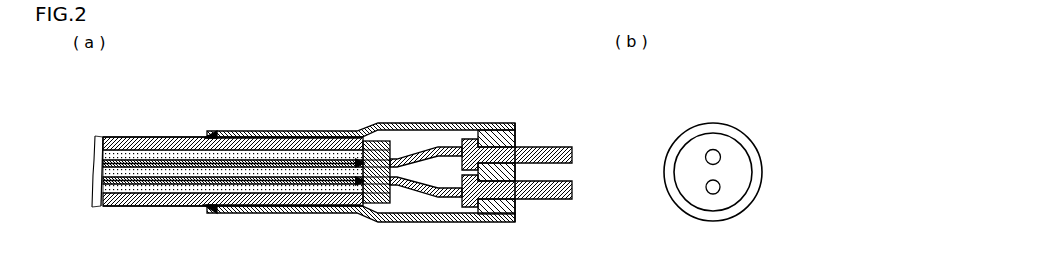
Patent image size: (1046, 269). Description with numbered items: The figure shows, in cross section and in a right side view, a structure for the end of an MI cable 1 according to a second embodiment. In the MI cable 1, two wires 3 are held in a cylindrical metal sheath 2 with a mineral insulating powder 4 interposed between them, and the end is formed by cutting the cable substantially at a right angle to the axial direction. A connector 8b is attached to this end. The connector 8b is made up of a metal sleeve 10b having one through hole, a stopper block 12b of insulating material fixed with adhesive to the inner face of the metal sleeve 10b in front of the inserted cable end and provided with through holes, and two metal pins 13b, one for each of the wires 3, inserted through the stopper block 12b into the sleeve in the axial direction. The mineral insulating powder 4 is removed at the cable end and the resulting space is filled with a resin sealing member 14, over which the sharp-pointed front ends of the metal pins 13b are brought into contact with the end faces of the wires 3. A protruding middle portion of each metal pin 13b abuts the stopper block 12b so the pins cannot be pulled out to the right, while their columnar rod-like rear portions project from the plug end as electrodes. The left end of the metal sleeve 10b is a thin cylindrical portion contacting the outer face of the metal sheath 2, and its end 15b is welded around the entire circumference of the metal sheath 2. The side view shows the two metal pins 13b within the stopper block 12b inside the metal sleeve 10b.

The MI cable 1 is at (143, 104).
The metal sheath 2 is at (150, 137).
The wires 3 is at (223, 164).
The mineral insulating powder 4 is at (163, 206).
The connector 8b is at (384, 98).
The metal sleeve 10b is at (318, 132).
The stopper block 12b is at (505, 124).
The metal pins 13b is at (447, 146).
The resin sealing member 14 is at (393, 221).
The end of the cylindrical portion 15b is at (207, 133).